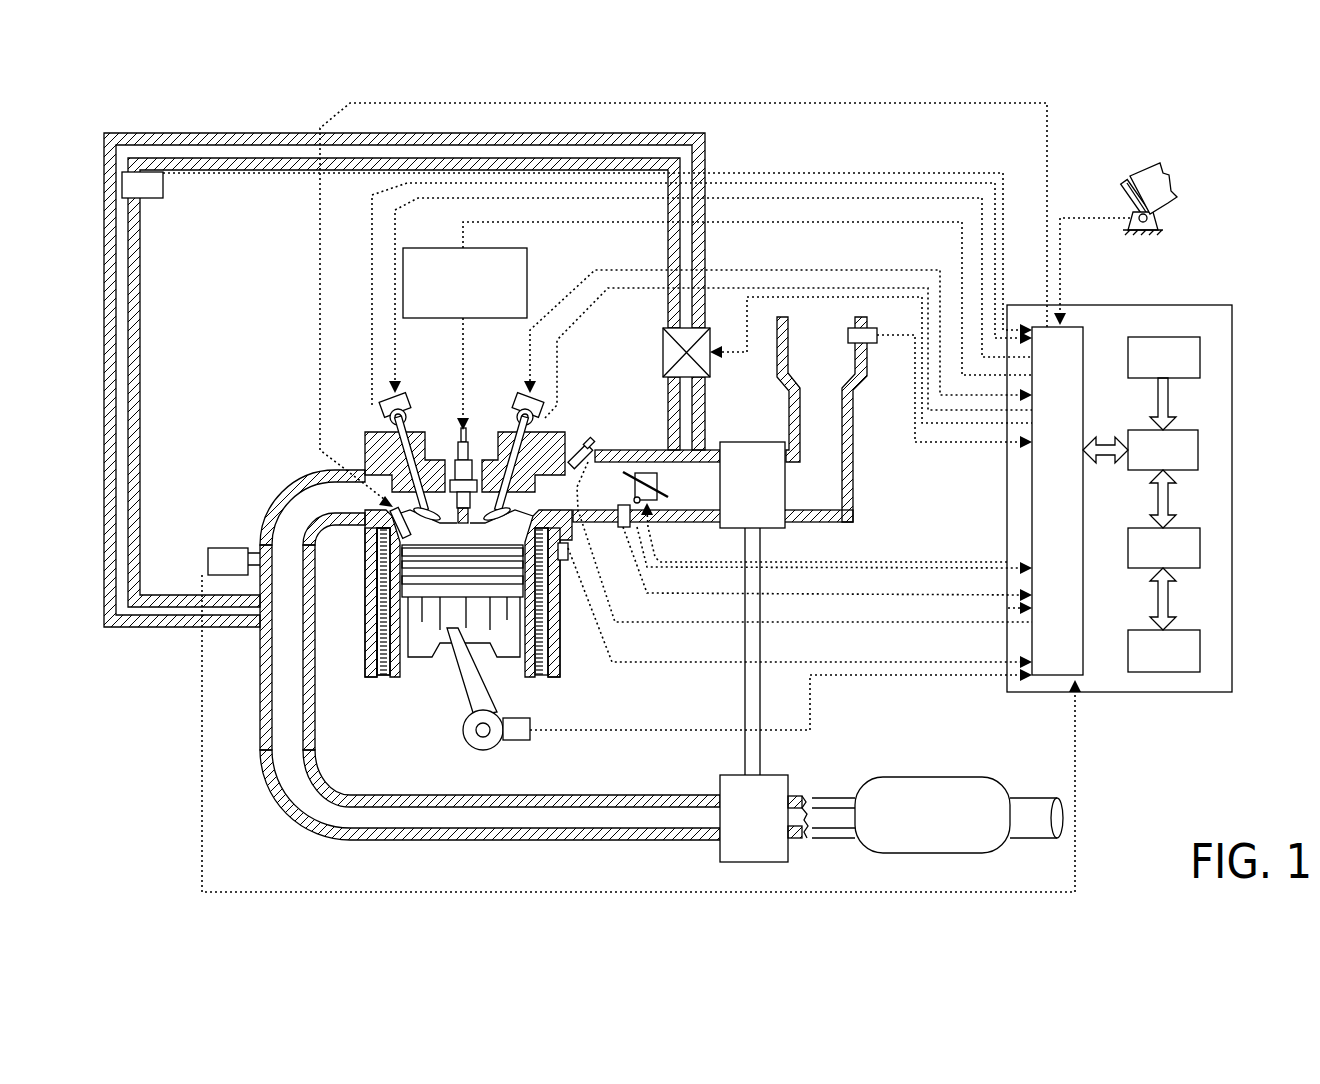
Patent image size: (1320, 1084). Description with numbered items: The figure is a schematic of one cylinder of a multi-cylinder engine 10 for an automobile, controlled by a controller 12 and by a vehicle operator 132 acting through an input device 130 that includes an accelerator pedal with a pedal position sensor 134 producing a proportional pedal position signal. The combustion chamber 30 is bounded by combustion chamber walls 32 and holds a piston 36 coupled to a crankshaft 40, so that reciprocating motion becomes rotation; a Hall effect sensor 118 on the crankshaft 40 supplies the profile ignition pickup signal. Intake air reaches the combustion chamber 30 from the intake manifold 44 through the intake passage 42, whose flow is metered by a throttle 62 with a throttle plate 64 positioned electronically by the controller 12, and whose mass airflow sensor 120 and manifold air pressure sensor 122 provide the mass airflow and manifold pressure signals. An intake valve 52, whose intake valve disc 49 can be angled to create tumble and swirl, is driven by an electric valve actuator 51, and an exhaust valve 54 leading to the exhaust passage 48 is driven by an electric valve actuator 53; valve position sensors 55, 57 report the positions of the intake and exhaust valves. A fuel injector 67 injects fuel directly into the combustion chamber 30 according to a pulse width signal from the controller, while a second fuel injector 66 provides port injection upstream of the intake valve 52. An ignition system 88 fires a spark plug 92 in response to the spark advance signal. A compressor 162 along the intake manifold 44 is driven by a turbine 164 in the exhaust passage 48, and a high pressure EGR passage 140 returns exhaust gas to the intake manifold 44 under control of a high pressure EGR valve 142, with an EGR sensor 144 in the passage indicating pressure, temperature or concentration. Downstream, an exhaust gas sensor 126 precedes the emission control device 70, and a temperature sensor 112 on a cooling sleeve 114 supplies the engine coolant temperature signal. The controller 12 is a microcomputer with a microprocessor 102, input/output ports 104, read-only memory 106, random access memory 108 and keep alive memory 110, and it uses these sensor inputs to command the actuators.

The engine 10 is at (303, 388).
The controller 12 is at (1222, 305).
The combustion chamber 30 is at (372, 630).
The combustion chamber walls 32 is at (403, 672).
The piston 36 is at (447, 630).
The crankshaft 40 is at (475, 747).
The intake passage 42 is at (834, 365).
The intake manifold 44 is at (697, 498).
The exhaust passage 48 is at (346, 506).
The intake valve disc 49 is at (492, 514).
The electric valve actuator 51 is at (515, 400).
The intake valve 52 is at (488, 490).
The electric valve actuator 53 is at (406, 400).
The exhaust valve 54 is at (370, 472).
The valve position sensor 55 is at (545, 418).
The valve position sensor 57 is at (380, 415).
The throttle 62 is at (650, 473).
The throttle plate 64 is at (623, 470).
The fuel injector 66 is at (588, 447).
The fuel injector 67 is at (373, 582).
The emission control device 70 is at (970, 778).
The ignition system 88 is at (440, 248).
The spark plug 92 is at (457, 478).
The microprocessor 102 is at (1200, 442).
The input/output ports 104 is at (1085, 335).
The read-only memory 106 is at (1200, 345).
The random access memory 108 is at (1200, 540).
The keep alive memory 110 is at (1200, 645).
The temperature sensor 112 is at (564, 560).
The cooling sleeve 114 is at (560, 672).
The Hall effect sensor 118 is at (518, 740).
The mass airflow sensor 120 is at (870, 343).
The manifold air pressure sensor 122 is at (623, 527).
The exhaust gas sensor 126 is at (210, 552).
The input device 130 is at (1122, 195).
The vehicle operator 132 is at (1172, 185).
The pedal position sensor 134 is at (1158, 222).
The high pressure EGR passage 140 is at (707, 167).
The high pressure EGR valve 142 is at (663, 350).
The EGR sensor 144 is at (162, 198).
The compressor 162 is at (745, 442).
The turbine 164 is at (718, 842).